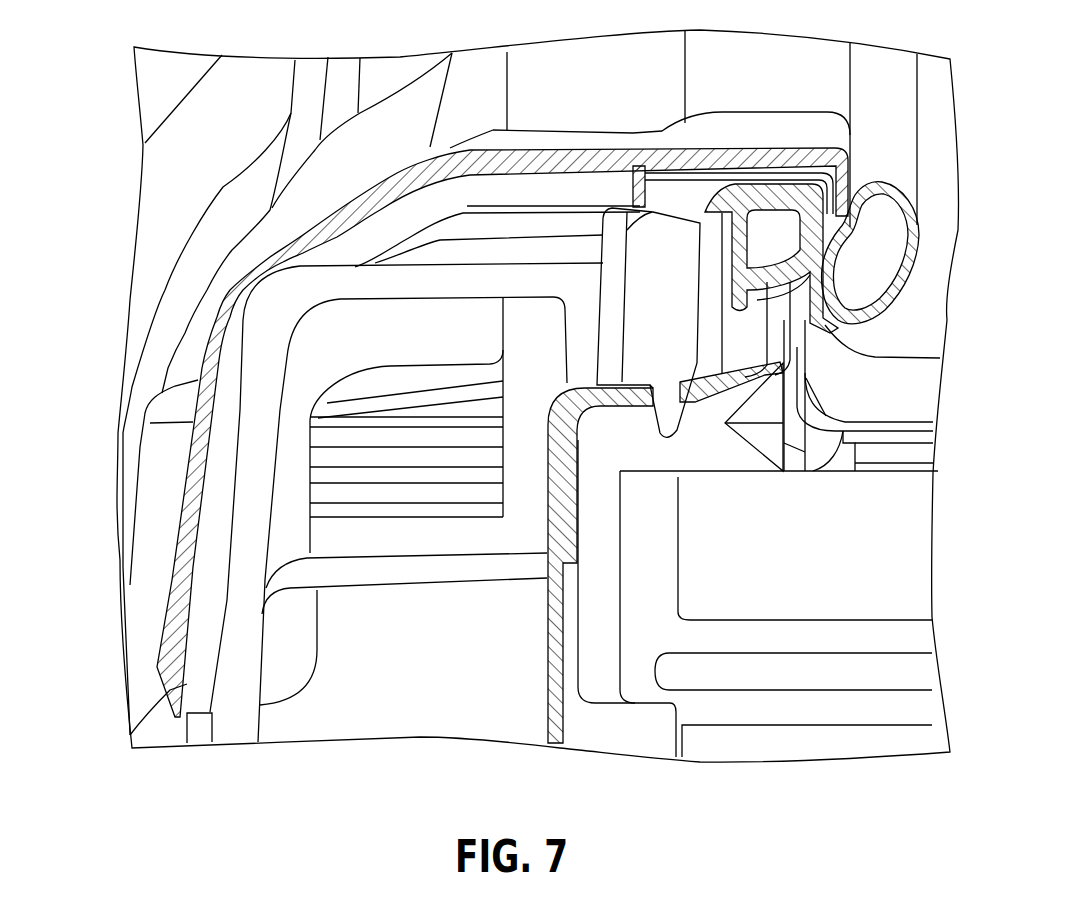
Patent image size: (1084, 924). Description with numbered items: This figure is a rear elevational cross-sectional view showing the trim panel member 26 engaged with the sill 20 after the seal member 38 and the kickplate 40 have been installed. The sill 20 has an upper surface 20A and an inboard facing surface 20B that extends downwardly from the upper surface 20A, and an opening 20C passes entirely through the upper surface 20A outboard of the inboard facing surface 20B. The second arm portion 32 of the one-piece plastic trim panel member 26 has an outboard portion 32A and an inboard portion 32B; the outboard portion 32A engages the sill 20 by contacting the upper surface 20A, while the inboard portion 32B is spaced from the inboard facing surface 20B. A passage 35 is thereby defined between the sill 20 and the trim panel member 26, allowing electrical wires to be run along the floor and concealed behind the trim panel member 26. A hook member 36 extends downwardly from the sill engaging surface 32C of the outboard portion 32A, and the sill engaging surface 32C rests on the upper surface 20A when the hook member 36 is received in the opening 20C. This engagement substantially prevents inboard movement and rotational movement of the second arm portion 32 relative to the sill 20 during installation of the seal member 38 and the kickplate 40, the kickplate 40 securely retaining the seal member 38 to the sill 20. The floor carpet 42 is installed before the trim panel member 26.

The sill 20 is at (578, 540).
The upper surface 20A is at (723, 377).
The inboard facing surface 20B is at (547, 632).
The opening 20C is at (698, 400).
The trim panel member 26 is at (566, 93).
The second arm portion 32 is at (388, 133).
The outboard portion 32A is at (673, 203).
The inboard portion 32B is at (130, 530).
The sill engaging surface 32C is at (612, 392).
The passage 35 is at (383, 628).
The hook member 36 is at (661, 432).
The seal member 38 is at (899, 277).
The kickplate 40 is at (650, 146).
The floor carpet 42 is at (213, 684).